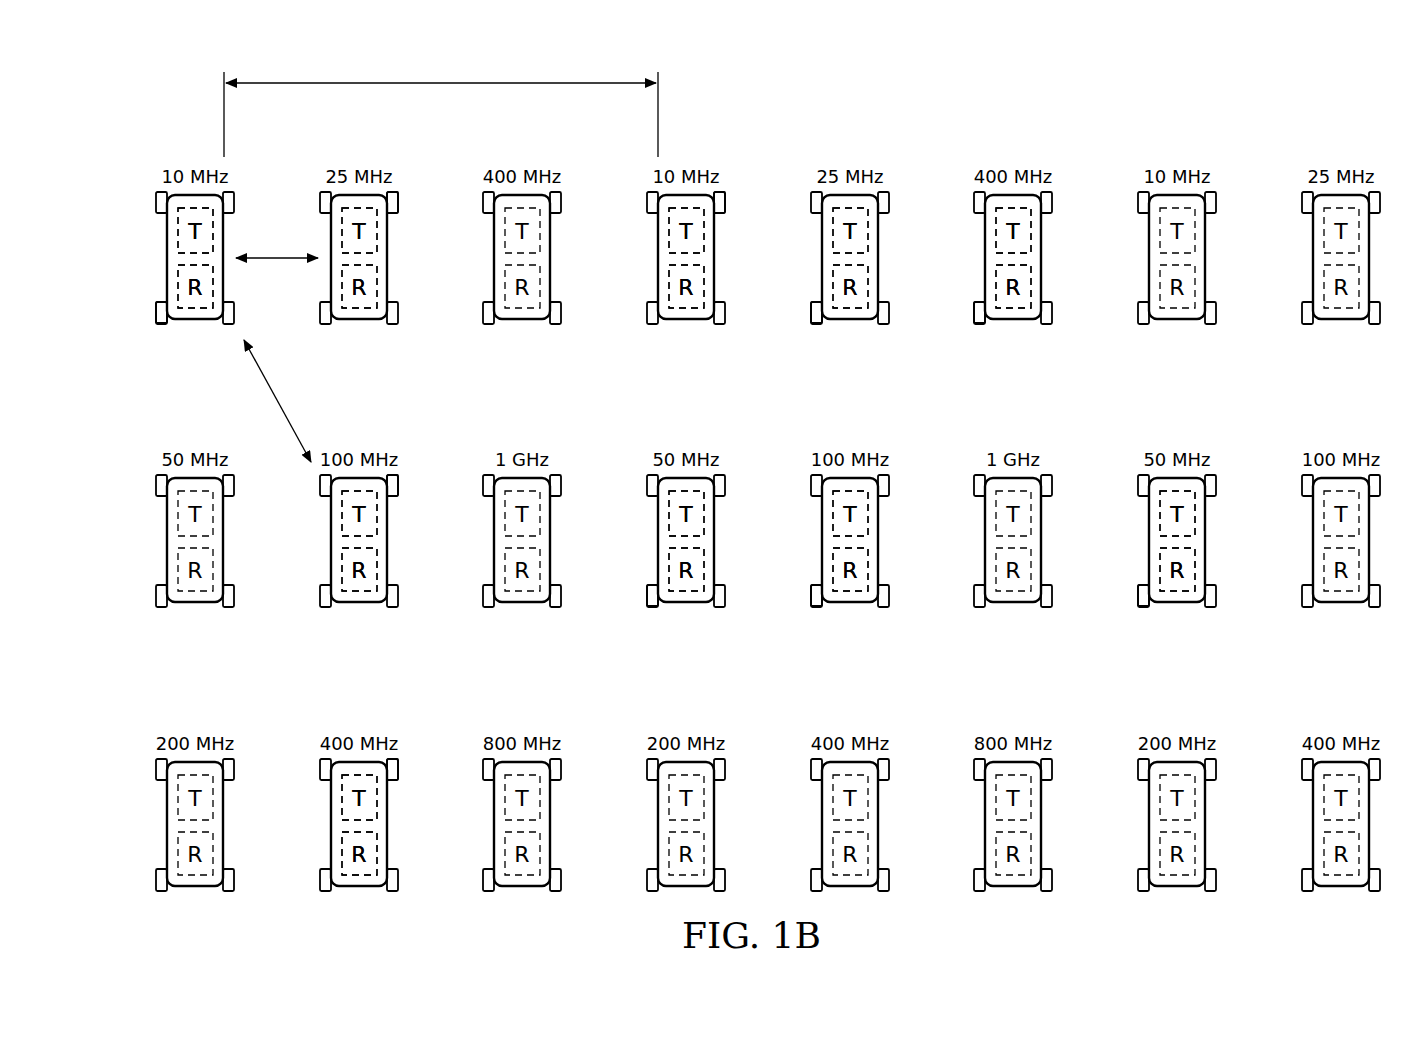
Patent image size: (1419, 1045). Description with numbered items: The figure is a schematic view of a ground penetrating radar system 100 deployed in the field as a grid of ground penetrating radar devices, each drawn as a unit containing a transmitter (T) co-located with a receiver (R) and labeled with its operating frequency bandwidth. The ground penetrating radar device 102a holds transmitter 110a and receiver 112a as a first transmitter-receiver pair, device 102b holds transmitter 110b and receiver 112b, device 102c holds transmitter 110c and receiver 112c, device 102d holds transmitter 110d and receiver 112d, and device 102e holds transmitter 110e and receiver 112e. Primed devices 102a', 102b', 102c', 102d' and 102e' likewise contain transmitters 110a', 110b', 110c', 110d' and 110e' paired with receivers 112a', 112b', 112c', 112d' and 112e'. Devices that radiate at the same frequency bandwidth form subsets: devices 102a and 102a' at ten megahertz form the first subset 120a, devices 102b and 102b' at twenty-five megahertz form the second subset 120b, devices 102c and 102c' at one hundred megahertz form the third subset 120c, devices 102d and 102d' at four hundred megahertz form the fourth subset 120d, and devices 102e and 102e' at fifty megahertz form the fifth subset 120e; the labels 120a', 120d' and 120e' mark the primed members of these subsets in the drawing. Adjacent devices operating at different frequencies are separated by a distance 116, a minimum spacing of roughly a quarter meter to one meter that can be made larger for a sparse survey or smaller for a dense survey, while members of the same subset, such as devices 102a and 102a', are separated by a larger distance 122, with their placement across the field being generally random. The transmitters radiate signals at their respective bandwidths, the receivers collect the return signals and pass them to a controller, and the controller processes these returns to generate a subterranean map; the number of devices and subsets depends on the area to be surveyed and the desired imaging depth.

The ground penetrating radar system 100 is at (1348, 99).
The ground penetrating radar device 102a is at (163, 225).
The ground penetrating radar device 102b is at (327, 225).
The ground penetrating radar device 102c is at (883, 508).
The ground penetrating radar device 102d is at (326, 791).
The ground penetrating radar device 102e is at (655, 508).
The ground penetrating radar device 102a' is at (652, 225).
The ground penetrating radar device 102b' is at (886, 224).
The ground penetrating radar device 102c' is at (326, 576).
The ground penetrating radar device 102d' is at (1049, 224).
The ground penetrating radar device 102e' is at (1212, 508).
The ground penetrating radar transmitter 110a is at (149, 230).
The ground penetrating radar transmitter 110b is at (403, 230).
The ground penetrating radar transmitter 110c is at (896, 513).
The ground penetrating radar transmitter 110d is at (312, 797).
The ground penetrating radar transmitter 110e is at (640, 513).
The ground penetrating radar transmitter 110a' is at (639, 230).
The ground penetrating radar transmitter 110b' is at (898, 230).
The ground penetrating radar transmitter 110c' is at (312, 513).
The ground penetrating radar transmitter 110d' is at (1061, 230).
The ground penetrating radar transmitter 110e' is at (1226, 513).
The ground penetrating radar receiver 112a is at (149, 286).
The ground penetrating radar receiver 112b is at (403, 286).
The ground penetrating radar receiver 112c is at (896, 569).
The ground penetrating radar receiver 112d is at (312, 853).
The ground penetrating radar receiver 112e is at (640, 569).
The ground penetrating radar receiver 112a' is at (639, 286).
The ground penetrating radar receiver 112b' is at (898, 286).
The ground penetrating radar receiver 112c' is at (312, 569).
The ground penetrating radar receiver 112d' is at (1061, 286).
The ground penetrating radar receiver 112e' is at (1226, 569).
The distance 116 is at (283, 256).
The first subset 120a is at (132, 355).
The second subset 120b is at (405, 162).
The third subset 120c is at (405, 446).
The fourth subset 120d is at (424, 725).
The fifth subset 120e is at (624, 637).
The sensor 120a' is at (752, 159).
The sensor 120d' is at (1045, 353).
The sensor 120e' is at (1211, 637).
The distance 122 is at (441, 82).